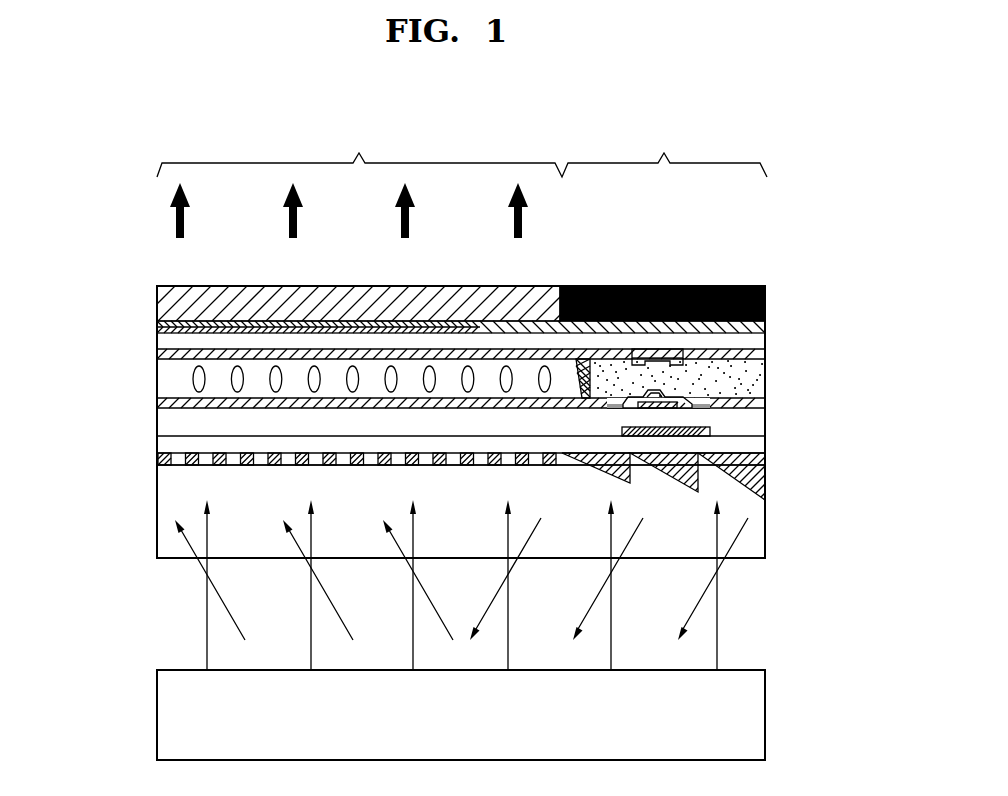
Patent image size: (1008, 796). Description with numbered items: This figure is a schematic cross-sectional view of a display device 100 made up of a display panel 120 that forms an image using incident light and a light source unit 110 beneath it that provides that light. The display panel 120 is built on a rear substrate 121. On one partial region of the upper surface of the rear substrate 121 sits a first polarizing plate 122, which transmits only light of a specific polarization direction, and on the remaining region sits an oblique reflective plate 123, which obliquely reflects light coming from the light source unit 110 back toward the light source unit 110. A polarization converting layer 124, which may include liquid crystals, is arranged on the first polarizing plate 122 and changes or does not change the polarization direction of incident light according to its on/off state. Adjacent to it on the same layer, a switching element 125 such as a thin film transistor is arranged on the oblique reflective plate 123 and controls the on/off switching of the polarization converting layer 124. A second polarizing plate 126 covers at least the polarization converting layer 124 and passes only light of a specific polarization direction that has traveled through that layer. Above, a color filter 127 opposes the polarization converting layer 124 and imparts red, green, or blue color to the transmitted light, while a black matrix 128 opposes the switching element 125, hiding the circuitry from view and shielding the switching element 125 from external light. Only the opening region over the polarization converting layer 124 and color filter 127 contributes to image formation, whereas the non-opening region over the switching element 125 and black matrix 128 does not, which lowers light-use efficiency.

The display device 100 is at (150, 612).
The light source unit 110 is at (755, 713).
The display panel 120 is at (152, 287).
The rear substrate 121 is at (755, 536).
The first polarizing plate 122 is at (441, 465).
The oblique reflective plate 123 is at (749, 494).
The polarization converting layer 124 is at (219, 372).
The switching element 125 is at (755, 380).
The second polarizing plate 126 is at (755, 326).
The color filter 127 is at (366, 295).
The black matrix 128 is at (765, 303).